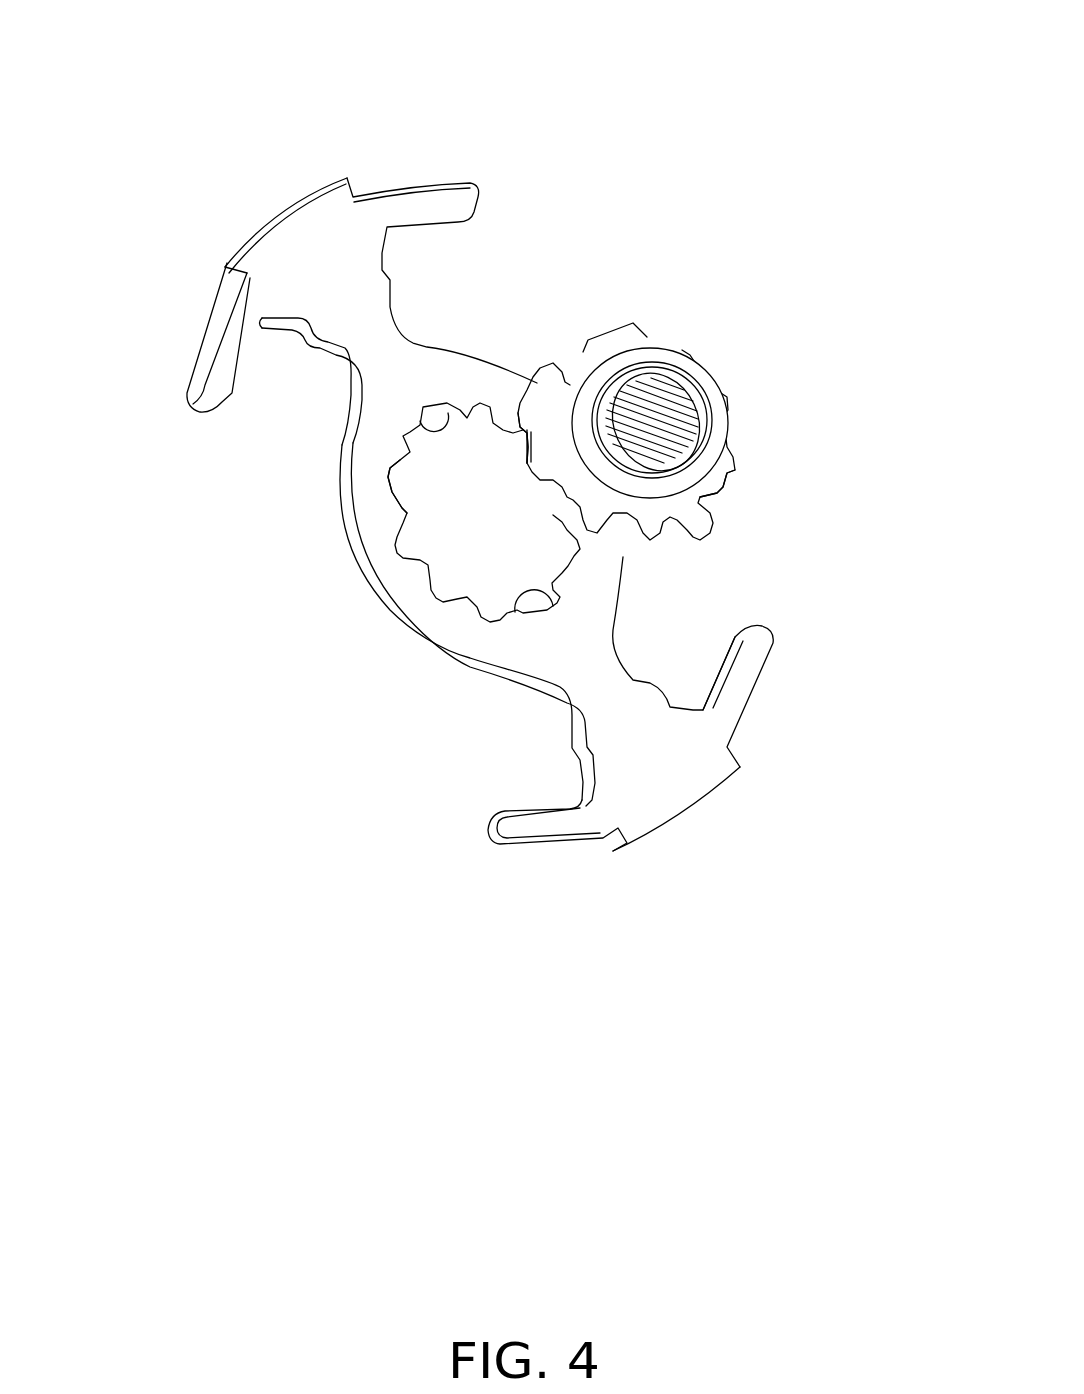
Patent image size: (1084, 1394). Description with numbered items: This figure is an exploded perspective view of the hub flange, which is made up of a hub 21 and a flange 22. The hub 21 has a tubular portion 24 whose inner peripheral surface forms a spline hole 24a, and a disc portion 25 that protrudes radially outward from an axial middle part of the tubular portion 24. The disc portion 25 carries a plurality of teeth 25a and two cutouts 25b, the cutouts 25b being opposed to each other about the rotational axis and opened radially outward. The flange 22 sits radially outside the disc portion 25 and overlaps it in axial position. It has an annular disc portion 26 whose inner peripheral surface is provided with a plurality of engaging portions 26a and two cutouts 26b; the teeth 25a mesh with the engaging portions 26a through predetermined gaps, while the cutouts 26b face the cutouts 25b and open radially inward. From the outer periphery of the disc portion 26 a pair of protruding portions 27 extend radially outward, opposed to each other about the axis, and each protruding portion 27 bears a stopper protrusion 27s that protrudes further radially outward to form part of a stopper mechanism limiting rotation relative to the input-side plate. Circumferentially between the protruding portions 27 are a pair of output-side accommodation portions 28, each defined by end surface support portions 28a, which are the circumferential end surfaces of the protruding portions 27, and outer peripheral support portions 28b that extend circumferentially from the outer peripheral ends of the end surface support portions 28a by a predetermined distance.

The hub 21 is at (555, 487).
The flange 22 is at (504, 506).
The tubular portion 24 is at (704, 472).
The spline hole 24a is at (663, 407).
The disc portion 25 is at (569, 439).
The teeth 25a is at (560, 463).
The cutouts 25b is at (587, 362).
The disc portion 26 is at (403, 522).
The engaging portions 26a is at (407, 503).
The cutouts 26b is at (455, 417).
The protruding portions 27 is at (519, 499).
The stopper protrusion 27s is at (303, 198).
The output-side accommodation portions 28 is at (504, 523).
The end surface support portions 28a is at (280, 322).
The outer peripheral support portions 28b is at (422, 198).